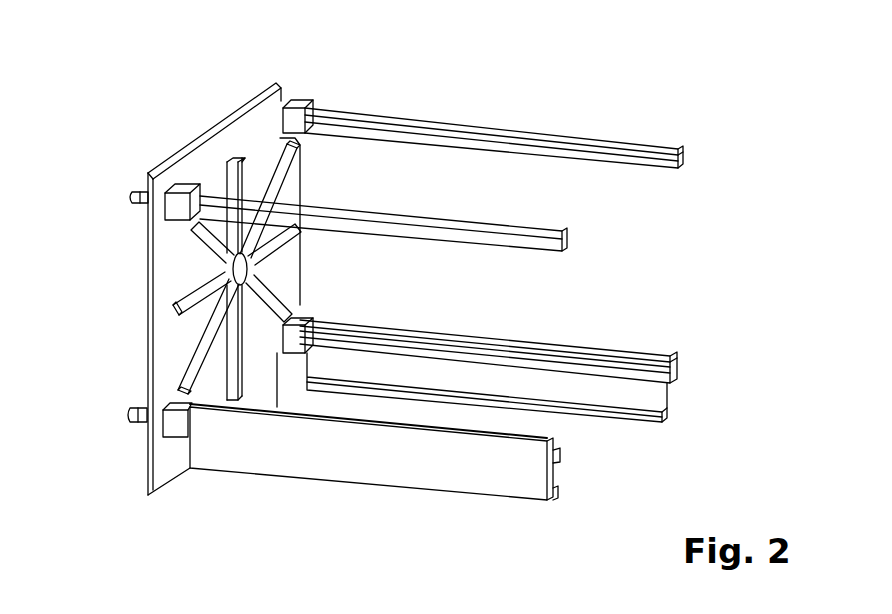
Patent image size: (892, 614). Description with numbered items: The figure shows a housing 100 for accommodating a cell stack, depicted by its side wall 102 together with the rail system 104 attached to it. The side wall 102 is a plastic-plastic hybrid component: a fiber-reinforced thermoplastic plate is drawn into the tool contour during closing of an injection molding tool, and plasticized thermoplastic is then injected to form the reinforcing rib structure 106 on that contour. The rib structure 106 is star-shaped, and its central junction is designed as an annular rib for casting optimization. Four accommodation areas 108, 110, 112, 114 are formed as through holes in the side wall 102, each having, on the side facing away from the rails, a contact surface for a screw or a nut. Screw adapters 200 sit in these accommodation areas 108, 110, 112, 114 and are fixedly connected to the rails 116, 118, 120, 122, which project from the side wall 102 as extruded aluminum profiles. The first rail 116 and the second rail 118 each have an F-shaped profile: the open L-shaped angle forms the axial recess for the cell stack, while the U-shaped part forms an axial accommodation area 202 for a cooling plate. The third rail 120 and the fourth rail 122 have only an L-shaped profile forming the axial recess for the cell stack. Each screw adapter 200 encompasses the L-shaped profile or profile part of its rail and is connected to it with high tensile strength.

The housing 100 is at (137, 118).
The side wall 102 is at (205, 147).
The rail system 104 is at (497, 86).
The rib structure 106 is at (167, 278).
The accommodation area 108 is at (147, 400).
The accommodation area 110 is at (280, 360).
The accommodation area 112 is at (277, 117).
The accommodation area 114 is at (149, 183).
The first rail 116 is at (462, 480).
The second rail 118 is at (672, 358).
The third rail 120 is at (565, 133).
The fourth rail 122 is at (450, 222).
The screw adapter 200 is at (297, 105).
The axial accommodation area 202 is at (640, 397).